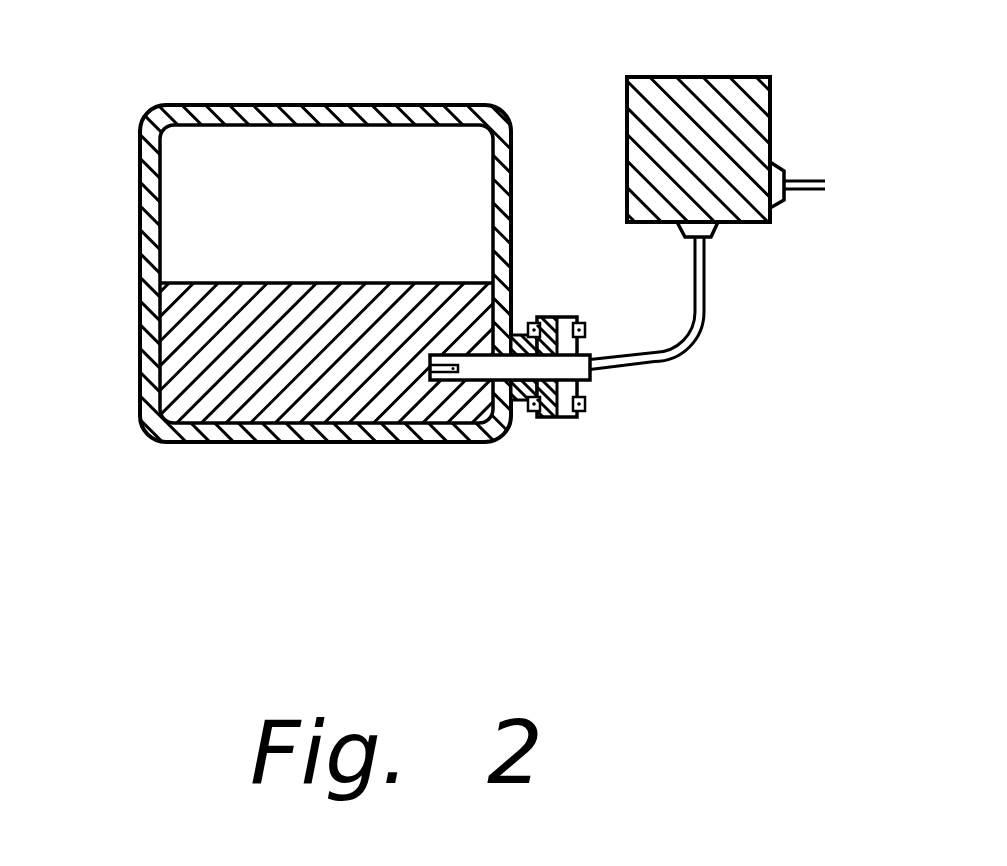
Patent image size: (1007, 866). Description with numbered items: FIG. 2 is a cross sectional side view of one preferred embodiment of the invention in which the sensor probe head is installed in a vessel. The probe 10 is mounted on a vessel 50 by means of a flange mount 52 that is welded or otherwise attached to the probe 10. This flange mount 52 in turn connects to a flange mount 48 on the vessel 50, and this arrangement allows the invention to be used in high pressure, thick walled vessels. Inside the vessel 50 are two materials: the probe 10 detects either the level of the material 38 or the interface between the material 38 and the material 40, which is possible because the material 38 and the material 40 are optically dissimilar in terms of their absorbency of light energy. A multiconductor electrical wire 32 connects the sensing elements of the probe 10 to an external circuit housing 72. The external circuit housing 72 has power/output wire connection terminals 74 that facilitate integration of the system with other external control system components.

The probe 10 is at (472, 368).
The multiconductor electrical wire 32 is at (702, 320).
The material 38 is at (232, 402).
The material 40 is at (207, 200).
The flange mount 48 is at (546, 410).
The vessel 50 is at (377, 437).
The flange mount 52 is at (563, 318).
The external circuit housing 72 is at (662, 95).
The power/output wire connection terminals 74 is at (810, 190).